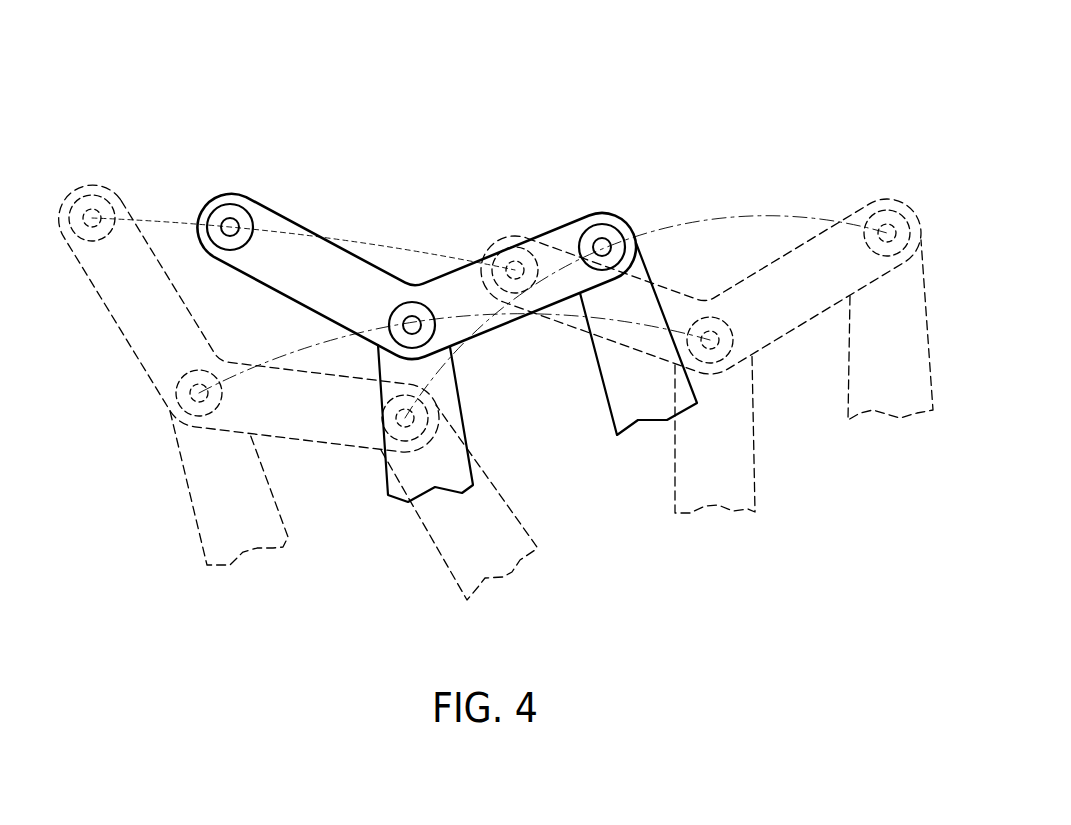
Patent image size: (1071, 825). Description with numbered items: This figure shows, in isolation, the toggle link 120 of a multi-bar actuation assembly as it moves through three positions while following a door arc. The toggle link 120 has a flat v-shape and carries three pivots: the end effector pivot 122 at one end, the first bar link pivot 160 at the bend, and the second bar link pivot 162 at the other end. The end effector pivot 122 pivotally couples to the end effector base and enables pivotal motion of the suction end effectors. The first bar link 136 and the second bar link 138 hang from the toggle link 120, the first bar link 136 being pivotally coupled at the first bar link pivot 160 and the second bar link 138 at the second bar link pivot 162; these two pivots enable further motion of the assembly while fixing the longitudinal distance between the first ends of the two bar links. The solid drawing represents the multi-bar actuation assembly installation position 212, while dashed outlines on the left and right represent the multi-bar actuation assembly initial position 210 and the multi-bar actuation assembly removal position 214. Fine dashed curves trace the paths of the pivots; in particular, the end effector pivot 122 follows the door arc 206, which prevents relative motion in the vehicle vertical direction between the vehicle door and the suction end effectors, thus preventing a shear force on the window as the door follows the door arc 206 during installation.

The toggle link 120 is at (416, 226).
The end effector pivot 122 is at (220, 205).
The first bar link 136 is at (458, 395).
The second bar link 138 is at (640, 270).
The first bar link pivot 160 is at (390, 313).
The second bar link pivot 162 is at (603, 225).
The door arc 206 is at (165, 218).
The multi-bar actuation assembly initial position 210 is at (76, 166).
The multi-bar actuation assembly installation position 212 is at (450, 252).
The multi-bar actuation assembly removal position 214 is at (758, 128).